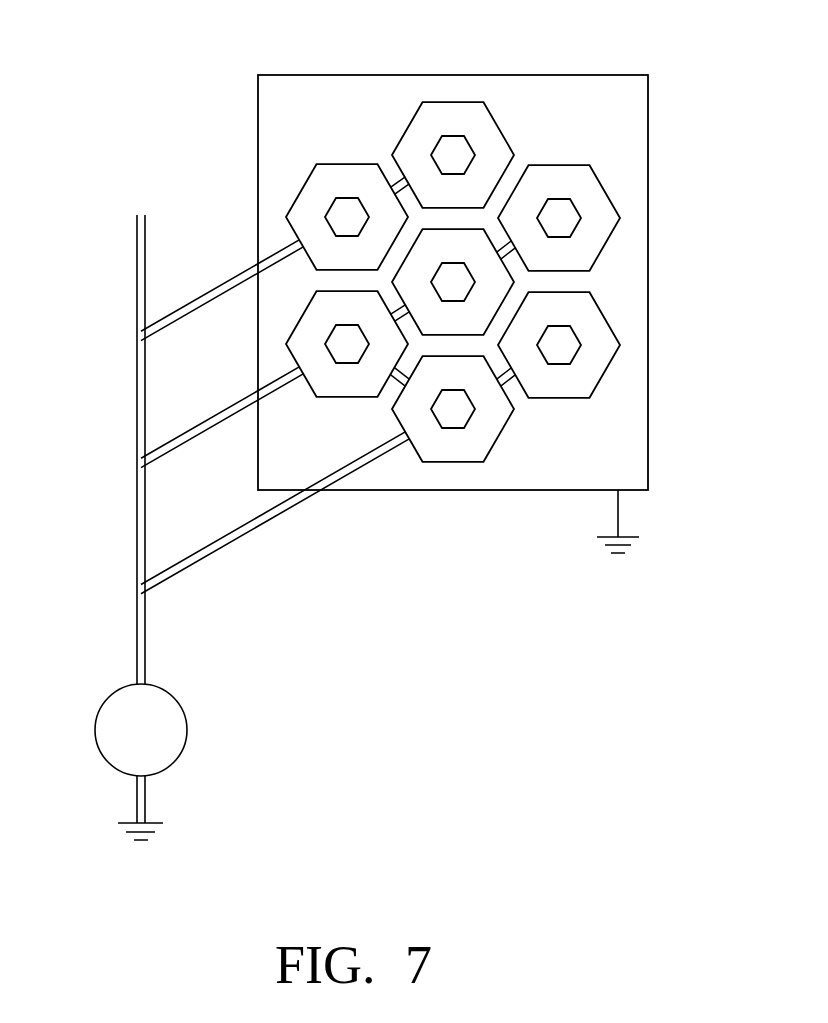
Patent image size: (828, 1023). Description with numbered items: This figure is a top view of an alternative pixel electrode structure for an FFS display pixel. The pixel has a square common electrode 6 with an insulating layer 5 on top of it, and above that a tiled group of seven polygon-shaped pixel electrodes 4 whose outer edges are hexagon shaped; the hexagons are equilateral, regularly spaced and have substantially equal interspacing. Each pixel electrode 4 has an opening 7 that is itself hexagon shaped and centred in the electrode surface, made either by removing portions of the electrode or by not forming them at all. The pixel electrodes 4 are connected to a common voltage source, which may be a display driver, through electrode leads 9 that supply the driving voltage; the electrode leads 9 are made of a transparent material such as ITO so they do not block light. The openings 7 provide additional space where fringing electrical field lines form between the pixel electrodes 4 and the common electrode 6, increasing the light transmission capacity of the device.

The polygon-shaped pixel electrodes 4 is at (362, 160).
The insulating layer 5 is at (453, 282).
The common electrode 6 is at (618, 90).
The opening 7 is at (567, 216).
The electrode leads 9 is at (213, 289).